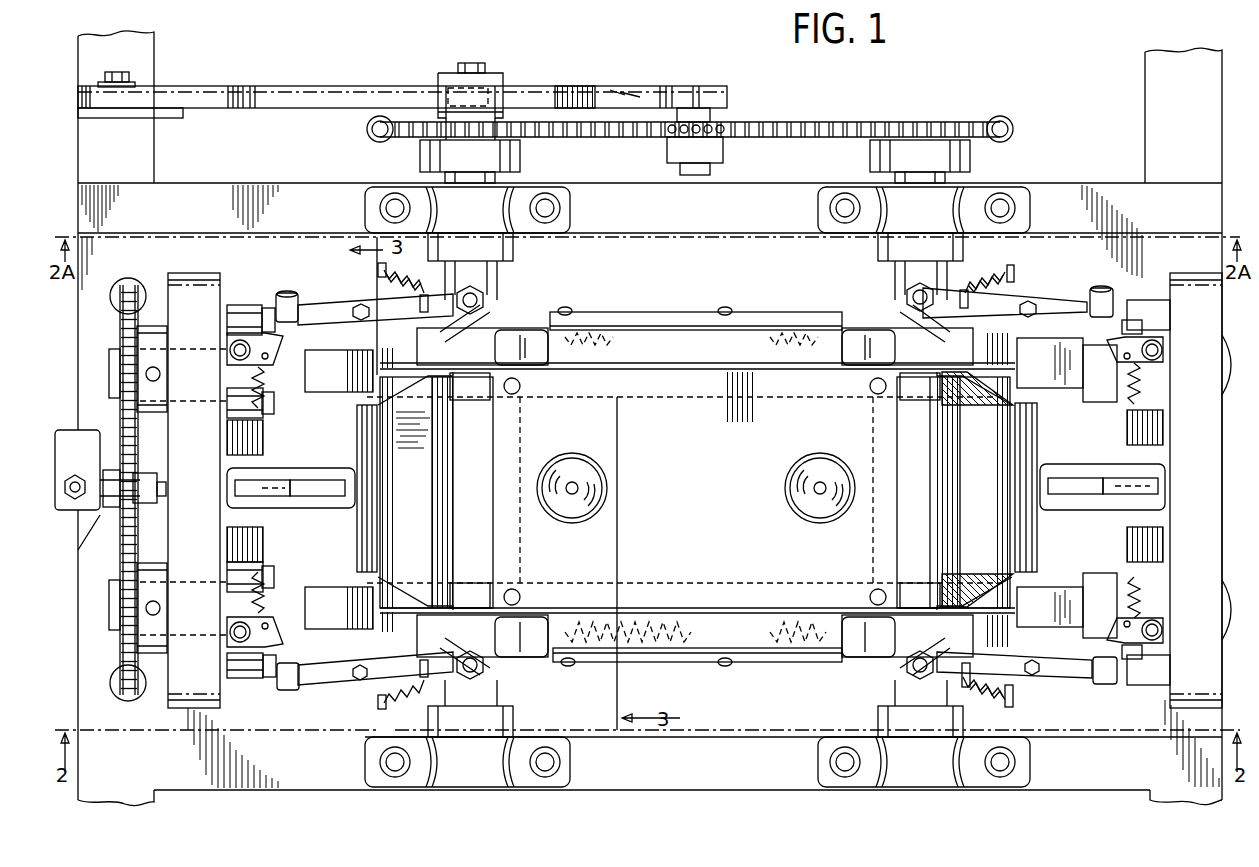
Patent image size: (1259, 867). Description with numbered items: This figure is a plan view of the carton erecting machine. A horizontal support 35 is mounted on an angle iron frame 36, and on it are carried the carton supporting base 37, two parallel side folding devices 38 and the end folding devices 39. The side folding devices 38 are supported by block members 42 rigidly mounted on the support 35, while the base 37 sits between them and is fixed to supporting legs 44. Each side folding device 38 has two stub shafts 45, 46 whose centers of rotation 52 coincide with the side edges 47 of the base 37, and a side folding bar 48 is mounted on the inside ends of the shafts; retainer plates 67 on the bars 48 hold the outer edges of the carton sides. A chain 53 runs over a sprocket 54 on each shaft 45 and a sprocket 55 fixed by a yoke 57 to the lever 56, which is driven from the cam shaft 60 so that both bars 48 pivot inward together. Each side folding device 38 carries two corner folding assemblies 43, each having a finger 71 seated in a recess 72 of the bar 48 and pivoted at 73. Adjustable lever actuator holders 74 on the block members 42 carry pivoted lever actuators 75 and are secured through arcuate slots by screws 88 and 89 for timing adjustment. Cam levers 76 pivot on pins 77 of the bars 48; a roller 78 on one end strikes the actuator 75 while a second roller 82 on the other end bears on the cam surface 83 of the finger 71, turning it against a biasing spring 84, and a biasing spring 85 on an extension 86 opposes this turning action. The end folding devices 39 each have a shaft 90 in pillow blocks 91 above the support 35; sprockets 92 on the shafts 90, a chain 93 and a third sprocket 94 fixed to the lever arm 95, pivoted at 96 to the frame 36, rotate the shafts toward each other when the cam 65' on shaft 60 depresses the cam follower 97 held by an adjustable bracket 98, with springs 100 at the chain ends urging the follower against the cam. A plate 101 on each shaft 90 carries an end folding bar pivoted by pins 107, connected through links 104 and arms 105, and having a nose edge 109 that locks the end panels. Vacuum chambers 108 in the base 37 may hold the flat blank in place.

The horizontal support 35 is at (708, 282).
The angle iron frame 36 is at (145, 56).
The carton supporting base 37 is at (691, 500).
The side folding device 38 is at (651, 302).
The end folding device 39 is at (342, 445).
The block member 42 is at (208, 283).
The corner folding assembly 43 is at (537, 372).
The supporting leg 44 is at (998, 383).
The stub shaft 45 is at (118, 362).
The stub shaft 46 is at (1230, 390).
The side edge of carton supporting base 47 is at (678, 365).
The side folding bar 48 is at (726, 357).
The center of rotation 52 is at (762, 372).
The chain 53 is at (126, 552).
The sprocket 54 is at (150, 335).
The sprocket 55 is at (147, 480).
The lever 56 is at (80, 435).
The yoke 57 is at (160, 496).
The cam shaft 60 is at (475, 78).
The cam 65' is at (576, 79).
The retainer plate 67 is at (758, 313).
The finger 71 is at (522, 330).
The recess 72 is at (558, 617).
The pivot 73 is at (500, 310).
The lever actuator holder 74 is at (1150, 305).
The lever actuator 75 is at (268, 352).
The cam lever 76 is at (400, 312).
The pin 77 is at (362, 304).
The roller 78 is at (290, 293).
The second roller 82 is at (465, 373).
The cam surface 83 is at (855, 315).
The biasing spring 84 is at (662, 620).
The biasing spring 85 is at (395, 282).
The extension 86 is at (1011, 272).
The screw 88 is at (267, 414).
The screw 89 is at (280, 302).
The shaft 90 is at (492, 178).
The pillow block 91 is at (464, 217).
The sprocket 92 is at (500, 160).
The chain 93 is at (790, 121).
The third sprocket 94 is at (715, 146).
The lever arm 95 is at (236, 110).
The pivot 96 is at (132, 77).
The cam follower 97 is at (498, 92).
The adjustable bracket 98 is at (447, 75).
The spring 100 is at (369, 132).
The plate 101 is at (395, 500).
The link 104 is at (292, 497).
The arm 105 is at (323, 500).
The pin 107 is at (378, 412).
The vacuum chamber 108 is at (582, 508).
The nose edge 109 is at (362, 520).